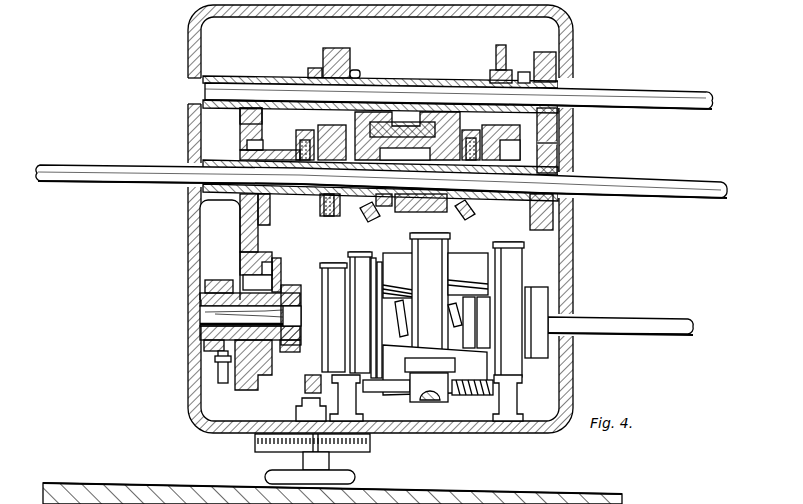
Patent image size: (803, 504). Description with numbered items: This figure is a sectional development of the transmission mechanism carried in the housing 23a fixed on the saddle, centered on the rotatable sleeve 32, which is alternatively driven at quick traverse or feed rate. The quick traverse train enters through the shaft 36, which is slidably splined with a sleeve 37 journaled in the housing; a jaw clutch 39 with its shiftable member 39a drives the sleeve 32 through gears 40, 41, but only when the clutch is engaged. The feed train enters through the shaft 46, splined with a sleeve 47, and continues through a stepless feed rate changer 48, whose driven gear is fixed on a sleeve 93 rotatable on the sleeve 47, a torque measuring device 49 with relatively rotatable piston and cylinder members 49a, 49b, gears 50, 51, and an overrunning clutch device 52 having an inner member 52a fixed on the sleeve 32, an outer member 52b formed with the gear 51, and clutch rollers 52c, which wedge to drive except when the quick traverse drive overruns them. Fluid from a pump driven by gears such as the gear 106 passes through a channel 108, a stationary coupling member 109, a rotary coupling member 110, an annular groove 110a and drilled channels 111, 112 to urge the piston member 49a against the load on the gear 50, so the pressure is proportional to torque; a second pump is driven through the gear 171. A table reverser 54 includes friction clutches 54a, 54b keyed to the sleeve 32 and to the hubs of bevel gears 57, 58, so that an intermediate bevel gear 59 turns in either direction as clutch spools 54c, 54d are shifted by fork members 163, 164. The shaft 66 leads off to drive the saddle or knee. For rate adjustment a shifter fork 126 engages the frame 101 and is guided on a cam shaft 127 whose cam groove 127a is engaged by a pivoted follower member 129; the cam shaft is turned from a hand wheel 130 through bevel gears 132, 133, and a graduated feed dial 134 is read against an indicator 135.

The housing 23a is at (566, 262).
The rotatable sleeve 32 is at (410, 194).
The shaft 36 is at (604, 95).
The sleeve 37 is at (400, 78).
The jaw clutch 39 is at (523, 72).
The shiftable member 39a is at (492, 74).
The gear 40 is at (556, 62).
The gear 41 is at (558, 158).
The shaft 46 is at (612, 324).
The sleeve 47 is at (292, 299).
The stepless feed rate changer 48 is at (338, 253).
The torque measuring device 49 is at (281, 285).
The piston member 49a is at (230, 283).
The cylinder member 49b is at (245, 268).
The gear 50 is at (242, 257).
The gear 51 is at (242, 226).
The overrunning clutch device 52 is at (278, 106).
The inner member 52a is at (272, 152).
The outer member 52b is at (246, 119).
The clutch roller 52c is at (248, 144).
The table reverser 54 is at (351, 235).
The friction clutch 54a is at (330, 148).
The friction clutch 54b is at (477, 141).
The clutch spool 54c is at (312, 200).
The clutch spool 54d is at (510, 210).
The bevel gear 57 is at (371, 222).
The bevel gear 58 is at (438, 219).
The intermediate bevel gear 59 is at (428, 112).
The shaft 66 is at (126, 186).
The sleeve 93 is at (283, 350).
The frame 101 is at (435, 299).
The gear 106 is at (355, 70).
The channel 108 is at (238, 385).
The stationary coupling member 109 is at (218, 366).
The rotary coupling member 110 is at (202, 333).
The annular groove 110a is at (210, 348).
The drilled channel 111 is at (202, 300).
The drilled channel 112 is at (202, 316).
The shifter fork 126 is at (452, 382).
The cam shaft 127 is at (398, 388).
The cam groove 127a is at (470, 396).
The pivoted follower member 129 is at (438, 402).
The hand wheel 130 is at (268, 477).
The bevel gear 132 is at (303, 401).
The bevel gear 133 is at (305, 384).
The graduated feed dial 134 is at (257, 441).
The indicator 135 is at (320, 448).
The shifter fork member 163 is at (308, 137).
The shifter fork member 164 is at (516, 146).
The gear 171 is at (314, 66).